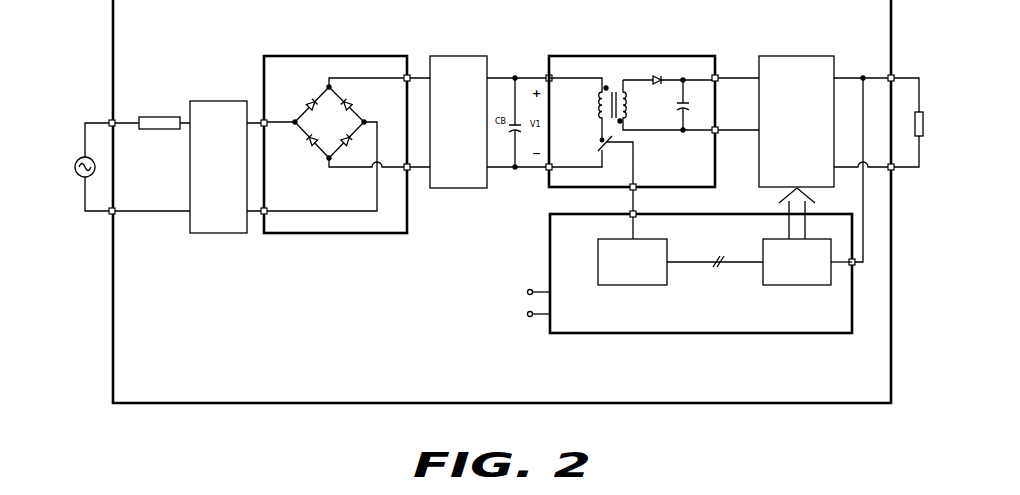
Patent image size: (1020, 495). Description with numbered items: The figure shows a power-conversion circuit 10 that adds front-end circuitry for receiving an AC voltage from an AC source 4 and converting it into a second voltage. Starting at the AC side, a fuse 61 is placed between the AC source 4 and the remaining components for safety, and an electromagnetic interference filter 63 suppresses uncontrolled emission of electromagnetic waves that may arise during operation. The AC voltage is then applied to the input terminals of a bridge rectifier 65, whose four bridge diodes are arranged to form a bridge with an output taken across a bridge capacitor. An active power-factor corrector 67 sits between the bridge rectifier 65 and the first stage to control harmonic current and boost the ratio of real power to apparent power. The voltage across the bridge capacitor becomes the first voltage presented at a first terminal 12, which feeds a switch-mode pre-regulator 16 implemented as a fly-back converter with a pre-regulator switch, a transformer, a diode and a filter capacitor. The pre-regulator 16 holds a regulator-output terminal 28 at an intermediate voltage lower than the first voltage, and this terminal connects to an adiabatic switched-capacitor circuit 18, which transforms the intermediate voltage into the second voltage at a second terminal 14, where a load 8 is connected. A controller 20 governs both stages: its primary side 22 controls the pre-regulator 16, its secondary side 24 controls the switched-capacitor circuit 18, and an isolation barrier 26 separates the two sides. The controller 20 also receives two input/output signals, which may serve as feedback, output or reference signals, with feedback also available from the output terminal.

The AC source 4 is at (73, 168).
The load 8 is at (925, 121).
The power-conversion circuit 10 is at (149, 383).
The first terminal 12 is at (546, 72).
The second terminal 14 is at (895, 72).
The switch-mode pre-regulator 16 is at (686, 175).
The adiabatic switched-capacitor circuit 18 is at (797, 54).
The controller 20 is at (558, 234).
The primary side 22 is at (633, 290).
The secondary side 24 is at (797, 290).
The isolation barrier 26 is at (713, 272).
The regulator-output terminal 28 is at (719, 72).
The fuse 61 is at (159, 114).
The electromagnetic interference filter 63 is at (218, 99).
The bridge rectifier 65 is at (333, 238).
The active power-factor corrector 67 is at (458, 54).